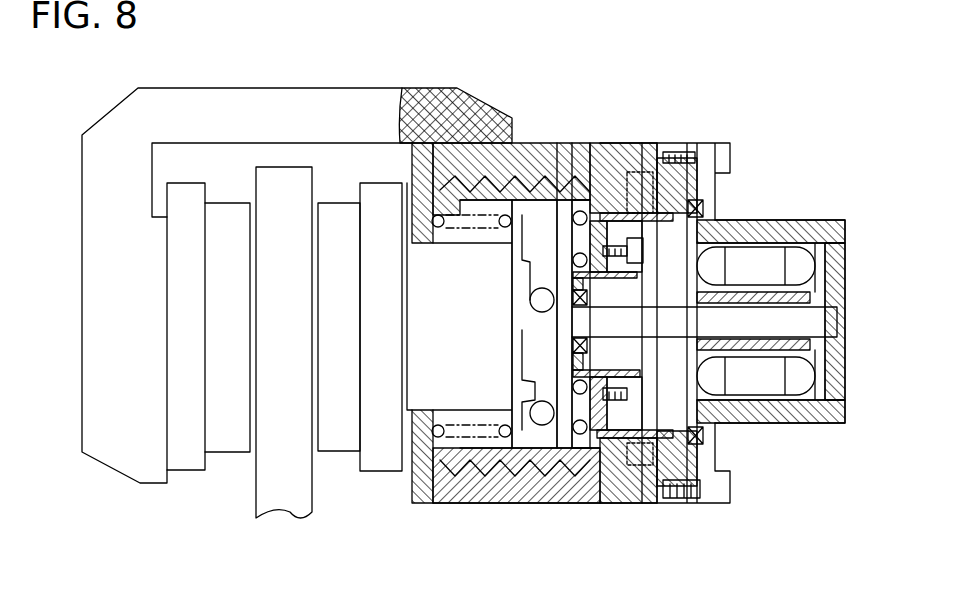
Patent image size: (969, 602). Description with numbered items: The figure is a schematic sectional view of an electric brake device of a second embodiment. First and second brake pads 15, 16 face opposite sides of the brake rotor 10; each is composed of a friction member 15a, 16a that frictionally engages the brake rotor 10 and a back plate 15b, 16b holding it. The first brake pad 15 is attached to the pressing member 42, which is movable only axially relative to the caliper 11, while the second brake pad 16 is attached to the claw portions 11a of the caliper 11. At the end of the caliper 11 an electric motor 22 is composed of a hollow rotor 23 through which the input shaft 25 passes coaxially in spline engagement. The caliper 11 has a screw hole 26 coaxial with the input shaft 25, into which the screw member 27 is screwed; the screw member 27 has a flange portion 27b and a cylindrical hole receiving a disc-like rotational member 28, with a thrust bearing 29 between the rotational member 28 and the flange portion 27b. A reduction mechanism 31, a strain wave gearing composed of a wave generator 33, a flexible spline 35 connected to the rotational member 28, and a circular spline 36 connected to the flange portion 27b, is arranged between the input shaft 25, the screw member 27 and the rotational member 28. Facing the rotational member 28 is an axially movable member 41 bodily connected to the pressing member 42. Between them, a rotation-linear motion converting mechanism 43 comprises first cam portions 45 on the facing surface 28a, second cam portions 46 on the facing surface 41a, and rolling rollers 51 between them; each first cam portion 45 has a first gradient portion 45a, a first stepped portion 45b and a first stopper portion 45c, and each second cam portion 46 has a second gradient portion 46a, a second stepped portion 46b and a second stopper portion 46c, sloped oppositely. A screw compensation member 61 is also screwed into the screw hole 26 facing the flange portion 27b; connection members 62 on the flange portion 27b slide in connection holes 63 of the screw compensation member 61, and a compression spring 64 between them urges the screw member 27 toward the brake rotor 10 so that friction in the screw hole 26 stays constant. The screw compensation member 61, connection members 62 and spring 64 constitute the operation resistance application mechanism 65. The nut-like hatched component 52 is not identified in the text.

The brake rotor 10 is at (285, 180).
The caliper 11 is at (353, 105).
The claw portions 11a is at (157, 472).
The first brake pad 15 is at (345, 182).
The friction member 15a is at (337, 445).
The back plate 15b is at (381, 458).
The second brake pad 16 is at (217, 182).
The friction member 16a is at (225, 445).
The back plate 16b is at (185, 473).
The electric motor 22 is at (787, 221).
The rotor 23 is at (793, 293).
The input shaft 25 is at (822, 325).
The screw hole 26 is at (507, 462).
The screw member 27 is at (500, 452).
The flange portion 27b is at (640, 465).
The rotational member 28 is at (590, 507).
The facing surface 28a is at (643, 462).
The thrust bearing 29 is at (600, 147).
The reduction mechanism 31 is at (648, 278).
The wave generator 33 is at (633, 352).
The flexible spline 35 is at (658, 420).
The circular spline 36 is at (778, 231).
The axially movable member 41 is at (520, 442).
The facing surface 41a is at (530, 250).
The pressing member 42 is at (447, 252).
The rotation-linear motion converting mechanism 43 is at (548, 455).
The first cam portions 45 is at (560, 205).
The first gradient portion 45a is at (533, 335).
The first stepped portion 45b is at (540, 396).
The first stopper portion 45c is at (540, 387).
The second cam portions 46 is at (537, 455).
The second gradient portion 46a is at (567, 200).
The second stepped portion 46b is at (530, 212).
The second stopper portion 46c is at (547, 213).
The rolling rollers 51 is at (530, 302).
The nut 52 is at (440, 230).
The screw compensation member 61 is at (693, 143).
The connection members 62 is at (620, 213).
The connection holes 63 is at (667, 222).
The compression spring 64 is at (650, 175).
The operation resistance application mechanism 65 is at (652, 182).